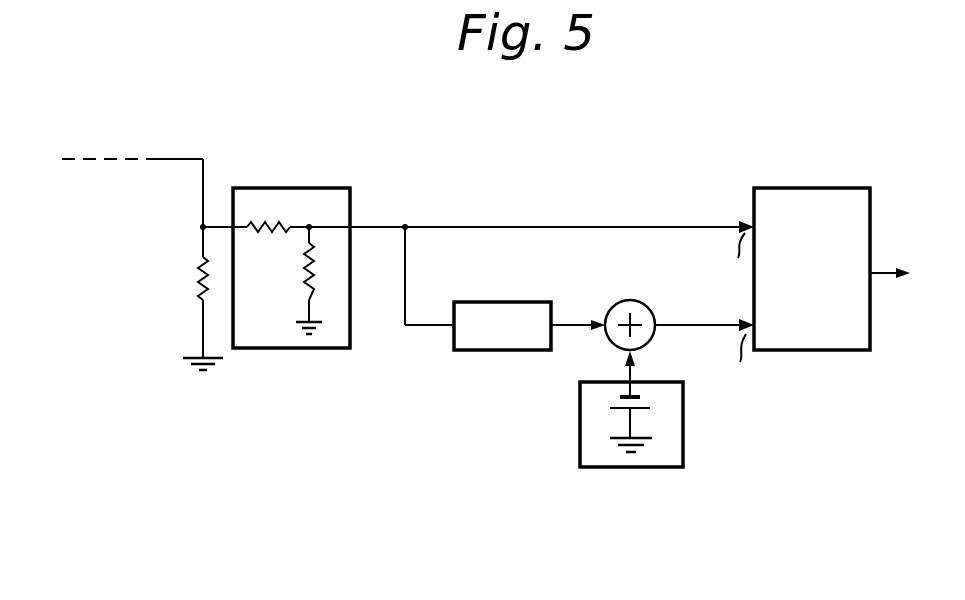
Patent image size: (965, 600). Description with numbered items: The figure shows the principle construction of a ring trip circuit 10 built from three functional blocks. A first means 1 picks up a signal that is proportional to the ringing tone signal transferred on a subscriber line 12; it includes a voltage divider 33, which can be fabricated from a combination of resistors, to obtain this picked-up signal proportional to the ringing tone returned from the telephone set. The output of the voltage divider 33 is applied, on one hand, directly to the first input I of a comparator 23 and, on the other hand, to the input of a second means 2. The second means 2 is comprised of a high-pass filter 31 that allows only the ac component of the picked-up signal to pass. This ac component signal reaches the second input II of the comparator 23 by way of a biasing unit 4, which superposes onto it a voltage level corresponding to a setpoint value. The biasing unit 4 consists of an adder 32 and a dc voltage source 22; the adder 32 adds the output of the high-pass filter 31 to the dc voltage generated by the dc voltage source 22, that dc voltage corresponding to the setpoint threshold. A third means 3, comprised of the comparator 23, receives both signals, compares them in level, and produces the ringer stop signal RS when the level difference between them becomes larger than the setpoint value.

The ring trip circuit 10 is at (527, 116).
The first means 1 is at (275, 145).
The subscriber line 12 is at (157, 160).
The voltage divider 33 is at (335, 188).
The second means 2 is at (460, 375).
The high-pass filter 31 is at (490, 302).
The adder 32 is at (647, 309).
The biasing unit 4 is at (672, 377).
The dc voltage source 22 is at (683, 447).
The third means 3 is at (733, 184).
The comparator 23 is at (848, 188).